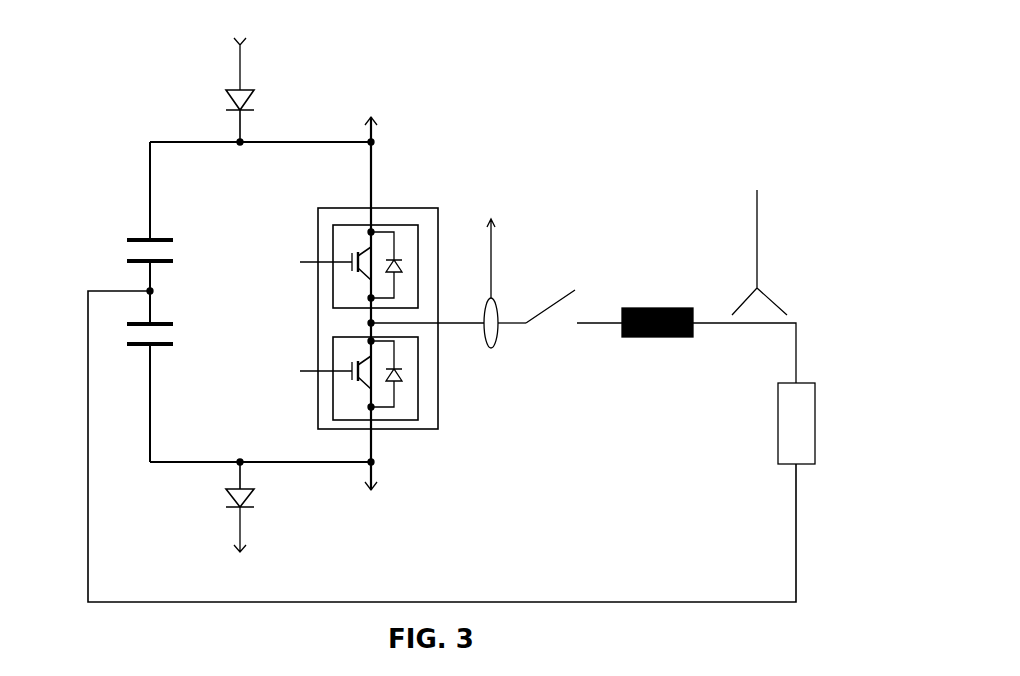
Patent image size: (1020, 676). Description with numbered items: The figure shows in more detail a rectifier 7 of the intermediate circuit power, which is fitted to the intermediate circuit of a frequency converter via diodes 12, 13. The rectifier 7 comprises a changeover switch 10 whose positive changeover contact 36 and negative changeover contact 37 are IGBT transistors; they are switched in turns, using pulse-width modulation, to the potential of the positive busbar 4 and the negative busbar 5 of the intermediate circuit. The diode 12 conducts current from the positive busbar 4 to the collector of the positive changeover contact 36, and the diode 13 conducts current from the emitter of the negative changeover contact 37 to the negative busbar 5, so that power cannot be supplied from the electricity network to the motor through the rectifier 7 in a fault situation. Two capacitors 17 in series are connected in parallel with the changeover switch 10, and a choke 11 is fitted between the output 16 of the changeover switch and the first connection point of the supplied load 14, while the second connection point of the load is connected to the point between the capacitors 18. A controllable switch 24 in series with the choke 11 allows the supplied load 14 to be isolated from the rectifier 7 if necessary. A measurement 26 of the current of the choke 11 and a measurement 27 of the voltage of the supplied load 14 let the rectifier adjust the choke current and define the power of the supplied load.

The positive busbar 4 is at (239, 53).
The negative busbar 5 is at (239, 543).
The rectifier of the intermediate circuit power 7 is at (600, 130).
The changeover switch 10 is at (405, 291).
The choke 11 is at (668, 308).
The diode 12 is at (252, 92).
The diode 13 is at (254, 492).
The supplied load 14 is at (778, 420).
The output of the changeover switch 16 is at (371, 323).
The capacitors 17 is at (160, 240).
The connection point between the capacitors 18 is at (150, 291).
The controllable switch 24 is at (565, 288).
The measurement of the current of the choke 26 is at (502, 307).
The measurement of the voltage of the supplied load 27 is at (757, 255).
The positive changeover contact 36 is at (418, 280).
The negative changeover contact 37 is at (418, 385).